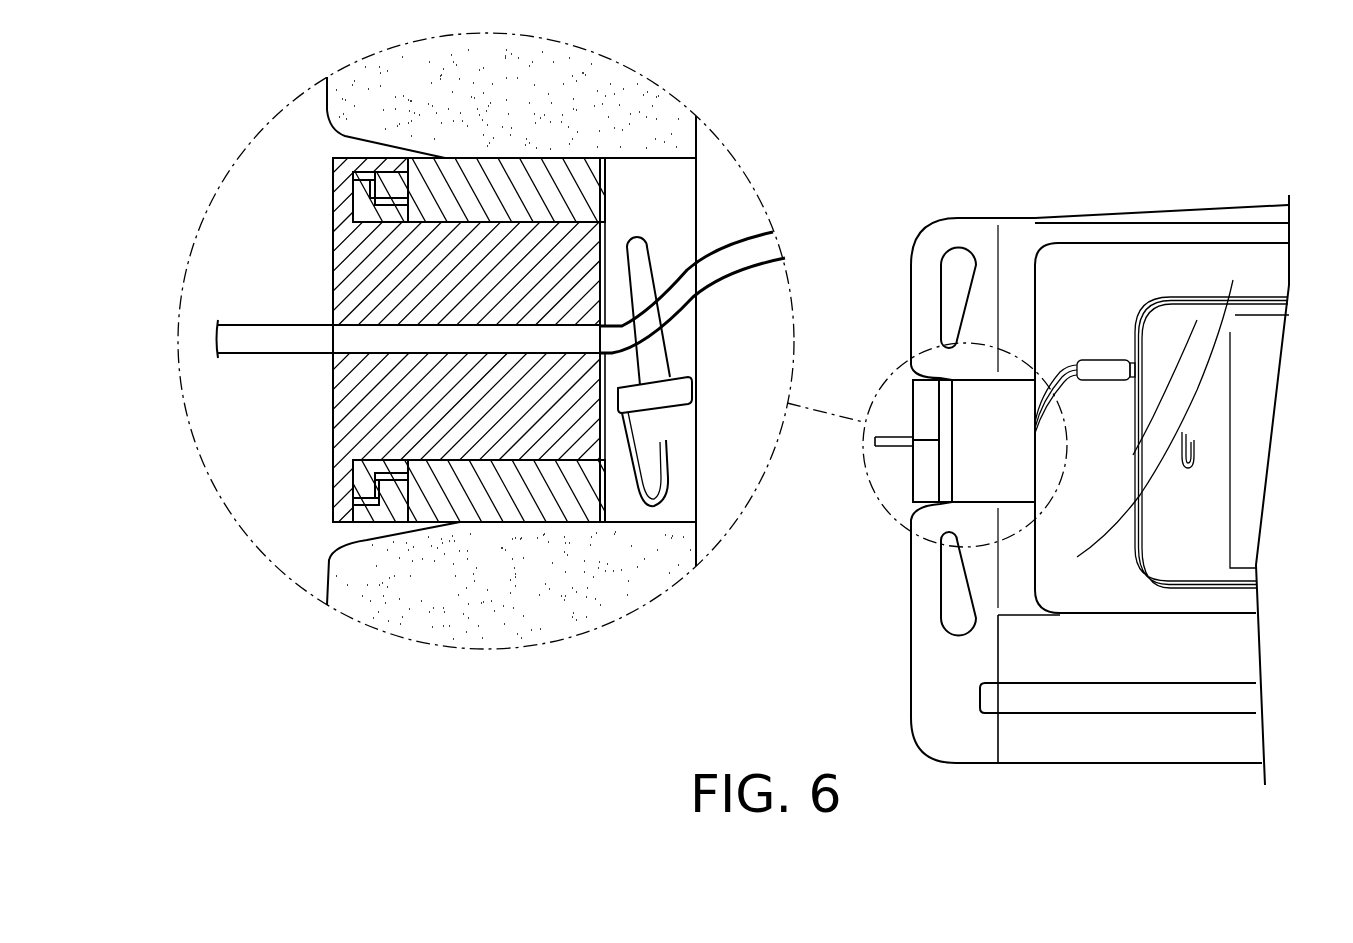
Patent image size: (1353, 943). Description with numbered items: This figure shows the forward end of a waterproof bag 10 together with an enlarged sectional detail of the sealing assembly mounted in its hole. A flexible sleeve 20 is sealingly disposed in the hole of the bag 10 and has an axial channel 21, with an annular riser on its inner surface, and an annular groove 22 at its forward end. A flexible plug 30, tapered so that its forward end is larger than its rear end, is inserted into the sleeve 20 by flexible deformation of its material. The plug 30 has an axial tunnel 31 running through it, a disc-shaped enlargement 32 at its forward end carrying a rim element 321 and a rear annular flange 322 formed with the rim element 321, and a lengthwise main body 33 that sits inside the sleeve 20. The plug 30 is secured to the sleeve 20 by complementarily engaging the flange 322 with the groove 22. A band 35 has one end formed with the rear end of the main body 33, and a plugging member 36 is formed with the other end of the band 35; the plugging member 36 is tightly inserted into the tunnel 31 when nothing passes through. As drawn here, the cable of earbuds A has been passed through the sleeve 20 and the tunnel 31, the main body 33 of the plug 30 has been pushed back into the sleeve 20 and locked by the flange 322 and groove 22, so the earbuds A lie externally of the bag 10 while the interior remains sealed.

The bag 10 is at (1183, 233).
The flexible sleeve 20 is at (575, 500).
The axial channel 21 is at (605, 228).
The annular groove 22 is at (423, 505).
The flexible plug 30 is at (318, 450).
The axial tunnel 31 is at (352, 345).
The disc-shaped enlargement 32 is at (333, 290).
The rim element 321 is at (378, 466).
The rear annular flange 322 is at (365, 507).
The lengthwise main body 33 is at (603, 247).
The band 35 is at (655, 448).
The plugging member 36 is at (680, 391).
The earbuds A is at (727, 265).